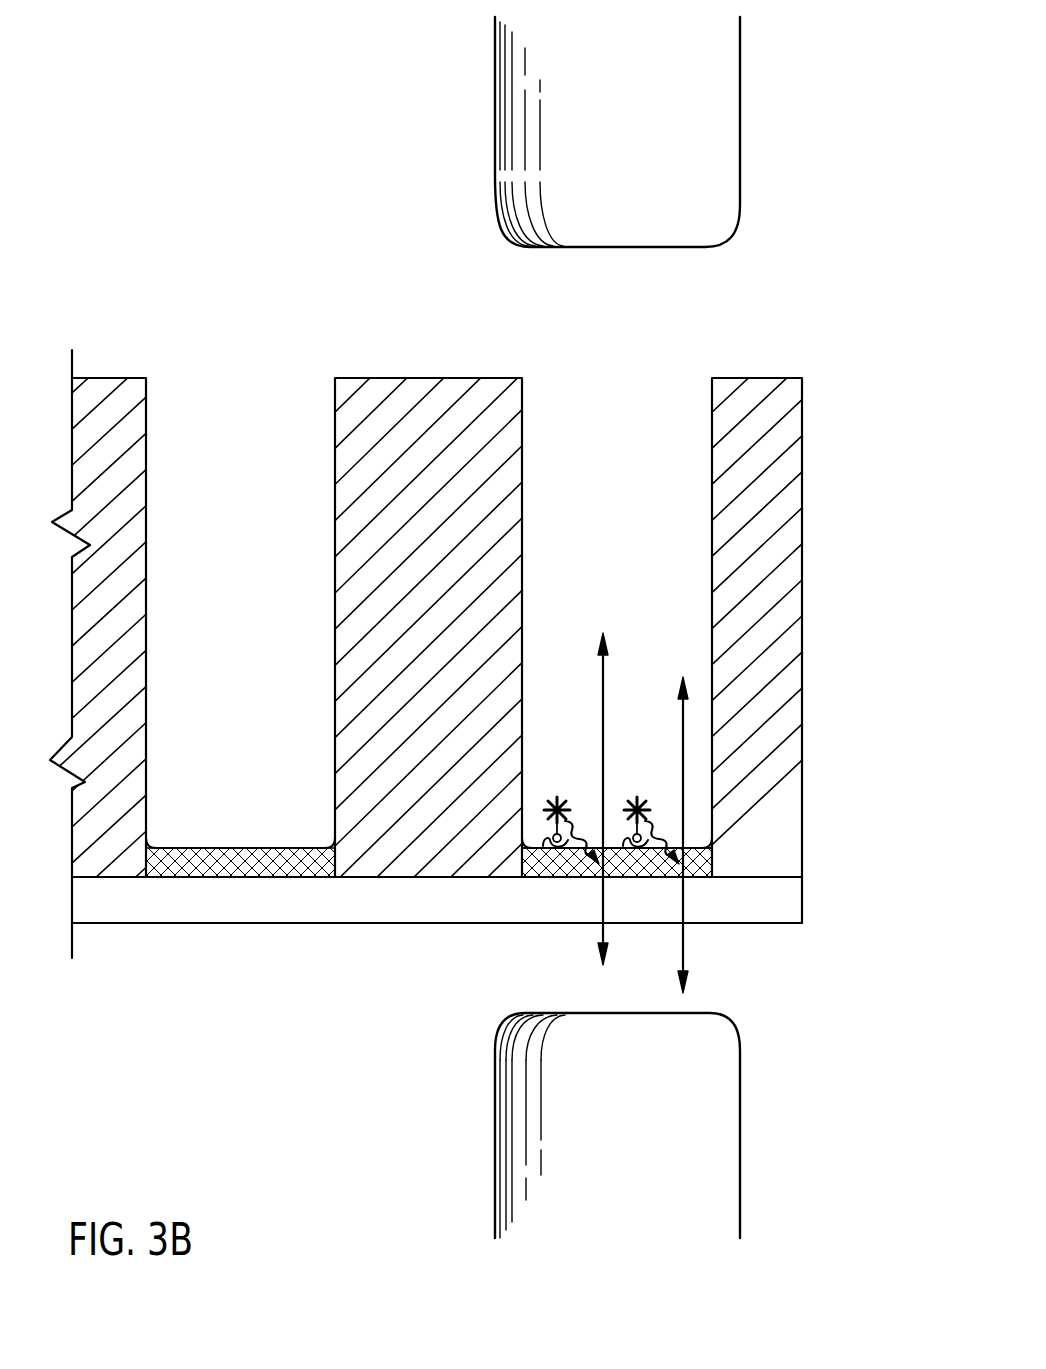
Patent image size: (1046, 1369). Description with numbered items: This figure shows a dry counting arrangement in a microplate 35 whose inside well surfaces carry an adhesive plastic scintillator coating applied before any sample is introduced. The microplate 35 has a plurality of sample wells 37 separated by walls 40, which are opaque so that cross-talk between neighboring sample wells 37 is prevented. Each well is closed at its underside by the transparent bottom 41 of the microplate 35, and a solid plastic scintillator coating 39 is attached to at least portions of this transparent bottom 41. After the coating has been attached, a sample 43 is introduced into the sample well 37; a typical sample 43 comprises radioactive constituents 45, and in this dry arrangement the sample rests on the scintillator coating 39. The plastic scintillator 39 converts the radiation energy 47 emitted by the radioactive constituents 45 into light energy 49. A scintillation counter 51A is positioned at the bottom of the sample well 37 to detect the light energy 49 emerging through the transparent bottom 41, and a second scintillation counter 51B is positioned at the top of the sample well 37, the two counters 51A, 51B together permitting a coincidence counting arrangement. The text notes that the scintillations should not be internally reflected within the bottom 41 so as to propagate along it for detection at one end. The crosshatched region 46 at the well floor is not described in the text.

The microplate 35 is at (138, 234).
The sample well 37 is at (688, 345).
The solid plastic scintillator coating 39 is at (698, 862).
The wall 40 is at (440, 397).
The transparent bottom 41 is at (372, 908).
The sample 43 is at (557, 780).
The radioactive constituent 45 is at (641, 793).
The seed layer 46 is at (533, 878).
The radiation energy 47 is at (667, 834).
The light energy 49 is at (683, 784).
The scintillation counter 51A is at (495, 1158).
The scintillation counter 51B is at (495, 99).